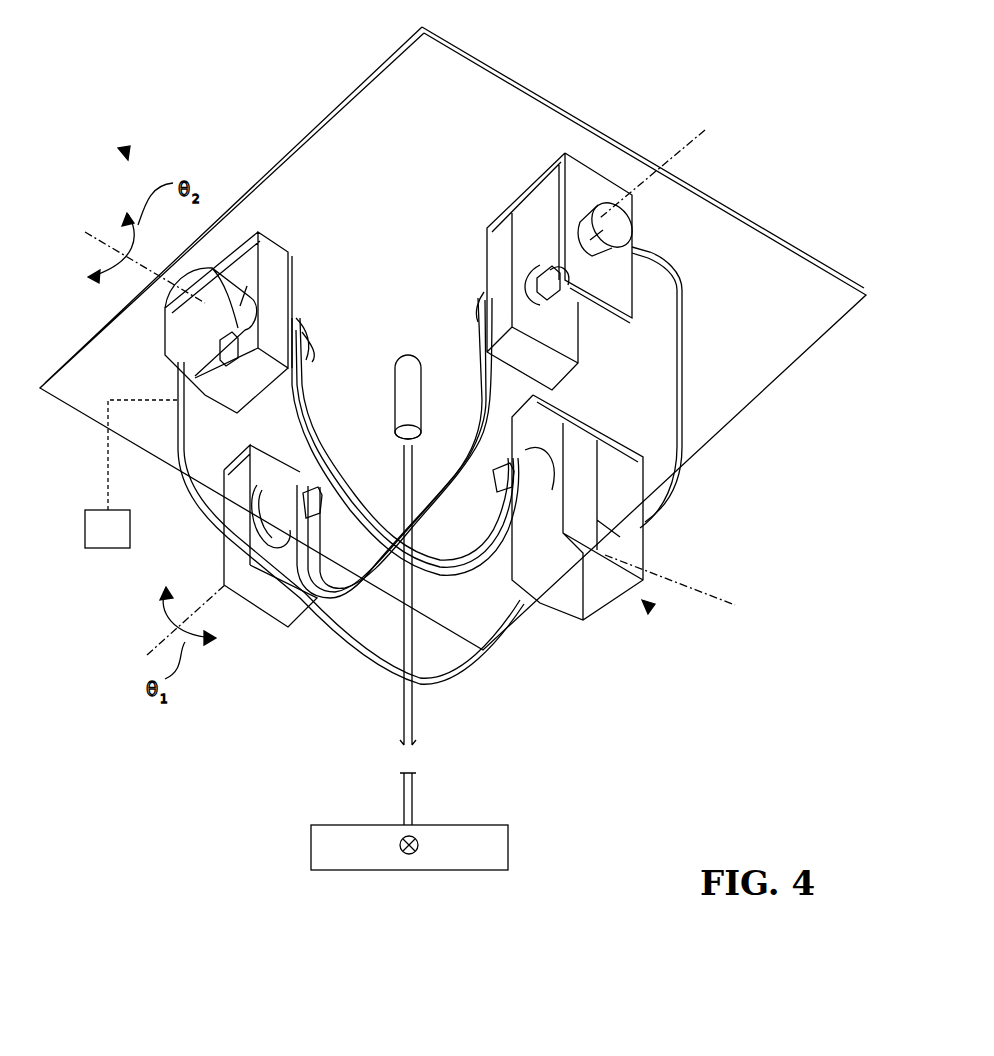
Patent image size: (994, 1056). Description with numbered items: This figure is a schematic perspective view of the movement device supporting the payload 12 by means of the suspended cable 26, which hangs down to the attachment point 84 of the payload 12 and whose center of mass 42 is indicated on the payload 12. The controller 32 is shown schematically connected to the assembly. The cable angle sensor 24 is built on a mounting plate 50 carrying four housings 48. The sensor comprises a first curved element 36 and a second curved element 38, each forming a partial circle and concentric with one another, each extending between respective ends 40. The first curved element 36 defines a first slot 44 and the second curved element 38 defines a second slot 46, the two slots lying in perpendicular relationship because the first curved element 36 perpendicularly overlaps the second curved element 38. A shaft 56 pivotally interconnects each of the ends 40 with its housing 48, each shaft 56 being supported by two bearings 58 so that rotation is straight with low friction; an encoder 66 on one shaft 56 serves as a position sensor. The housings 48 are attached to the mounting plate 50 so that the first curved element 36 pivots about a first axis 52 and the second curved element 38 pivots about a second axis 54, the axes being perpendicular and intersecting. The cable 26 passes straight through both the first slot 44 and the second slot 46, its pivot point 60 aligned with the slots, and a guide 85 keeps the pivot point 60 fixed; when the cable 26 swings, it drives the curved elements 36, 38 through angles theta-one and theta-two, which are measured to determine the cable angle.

The payload 12 is at (466, 863).
The cable angle sensor 24 is at (124, 156).
The suspended cable 26 is at (412, 730).
The controller 32 is at (120, 539).
The first curved element 36 is at (300, 590).
The second curved element 38 is at (490, 605).
The ends 40 is at (303, 340).
The center of mass 42 is at (402, 850).
The first slot 44 is at (445, 562).
The second slot 46 is at (358, 590).
The housing 48 is at (277, 252).
The mounting plate 50 is at (112, 333).
The first axis 52 is at (160, 640).
The second axis 54 is at (90, 230).
The shaft 56 is at (557, 297).
The bearings 58 is at (280, 490).
The pivot point 60 is at (404, 443).
The encoder 66 is at (165, 333).
The attachment point 84 is at (405, 800).
The guide 85 is at (410, 357).